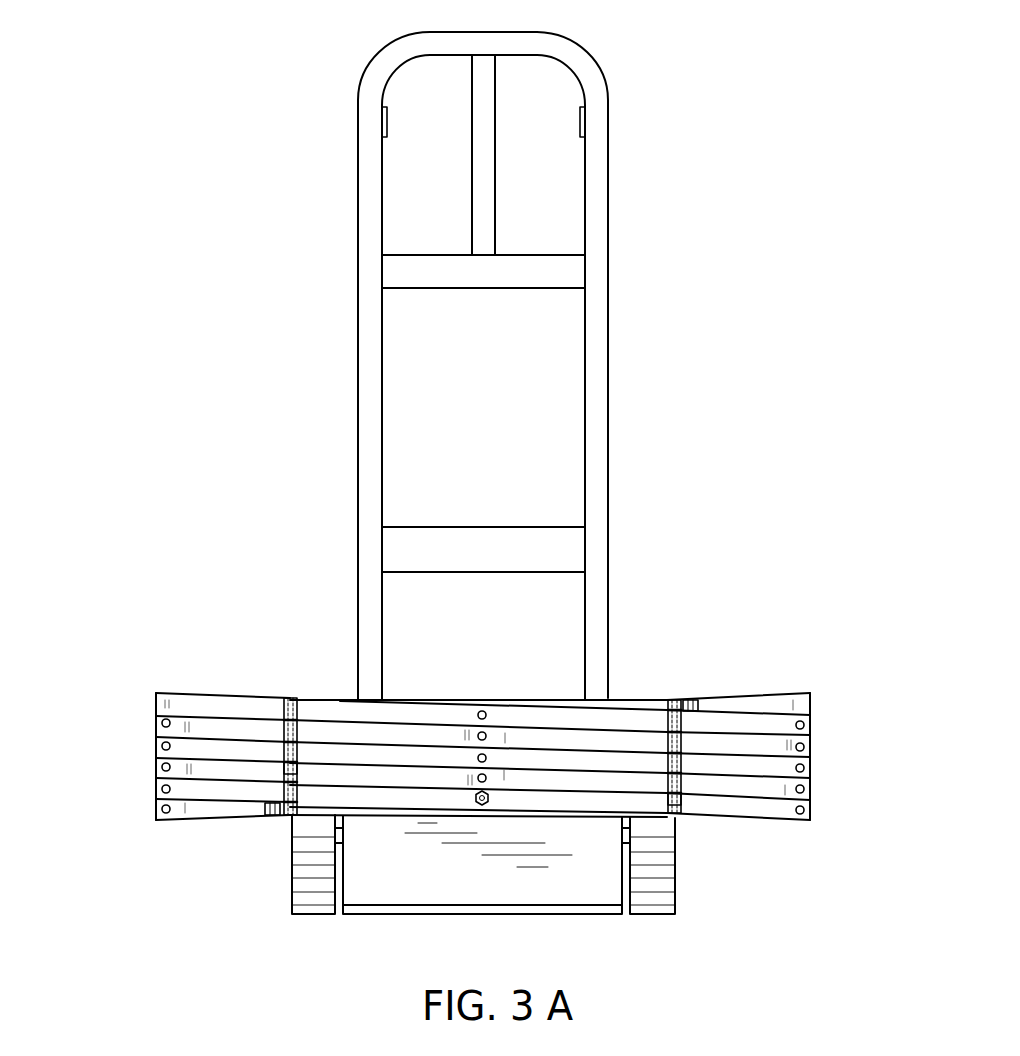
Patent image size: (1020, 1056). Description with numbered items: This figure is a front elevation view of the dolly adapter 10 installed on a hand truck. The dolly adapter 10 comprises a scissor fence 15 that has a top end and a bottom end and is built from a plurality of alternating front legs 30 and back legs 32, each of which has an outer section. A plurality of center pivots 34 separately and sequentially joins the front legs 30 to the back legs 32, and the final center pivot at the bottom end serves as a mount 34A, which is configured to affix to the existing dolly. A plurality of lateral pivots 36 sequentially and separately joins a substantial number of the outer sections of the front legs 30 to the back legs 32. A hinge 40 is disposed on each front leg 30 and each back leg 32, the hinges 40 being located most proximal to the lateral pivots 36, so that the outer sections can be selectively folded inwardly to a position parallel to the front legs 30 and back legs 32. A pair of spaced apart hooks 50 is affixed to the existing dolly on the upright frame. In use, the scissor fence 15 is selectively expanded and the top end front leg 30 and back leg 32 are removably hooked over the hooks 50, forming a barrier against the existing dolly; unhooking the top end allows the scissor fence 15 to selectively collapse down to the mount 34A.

The dolly adapter 10 is at (731, 684).
The scissor fence 15 is at (443, 718).
The front legs 30 is at (313, 708).
The back legs 32 is at (642, 700).
The center pivots 34 is at (483, 713).
The mount 34A is at (484, 806).
The lateral pivots 36 is at (164, 723).
The hinge 40 is at (287, 768).
The hooks 50 is at (386, 121).